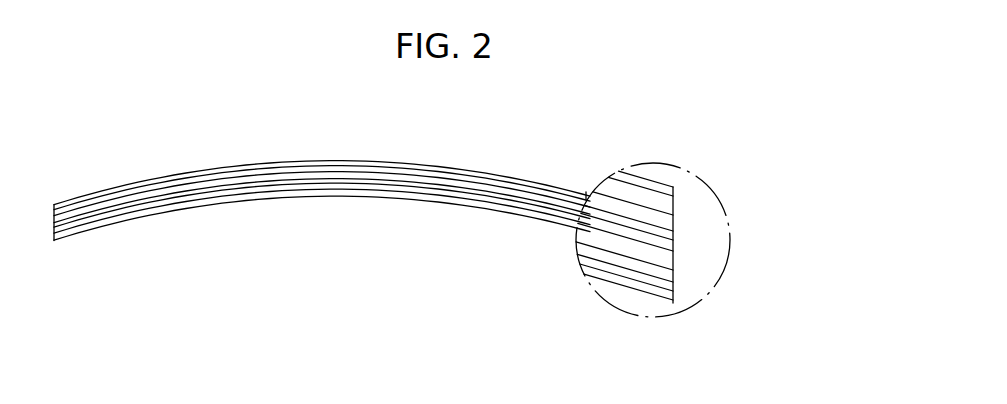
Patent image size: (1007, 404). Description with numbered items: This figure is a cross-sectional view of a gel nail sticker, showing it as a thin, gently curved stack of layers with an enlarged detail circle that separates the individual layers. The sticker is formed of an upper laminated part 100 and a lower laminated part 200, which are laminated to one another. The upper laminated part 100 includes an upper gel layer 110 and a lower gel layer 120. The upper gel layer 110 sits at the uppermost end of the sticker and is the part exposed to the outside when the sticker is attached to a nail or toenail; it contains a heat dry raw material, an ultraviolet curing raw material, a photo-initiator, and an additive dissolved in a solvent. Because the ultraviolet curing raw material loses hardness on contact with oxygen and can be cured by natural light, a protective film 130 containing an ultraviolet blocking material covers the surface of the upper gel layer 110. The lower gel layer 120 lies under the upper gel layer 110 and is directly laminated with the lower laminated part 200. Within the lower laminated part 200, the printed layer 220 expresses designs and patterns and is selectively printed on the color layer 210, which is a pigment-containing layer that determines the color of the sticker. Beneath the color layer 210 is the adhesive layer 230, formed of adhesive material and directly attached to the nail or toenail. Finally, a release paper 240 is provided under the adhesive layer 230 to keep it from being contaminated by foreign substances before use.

The upper laminated part 100 is at (712, 210).
The upper gel layer 110 is at (675, 209).
The lower gel layer 120 is at (675, 233).
The protective film 130 is at (675, 193).
The lower laminated part 200 is at (708, 302).
The color layer 210 is at (675, 275).
The printed layer 220 is at (675, 262).
The adhesive layer 230 is at (675, 290).
The release paper 240 is at (676, 298).